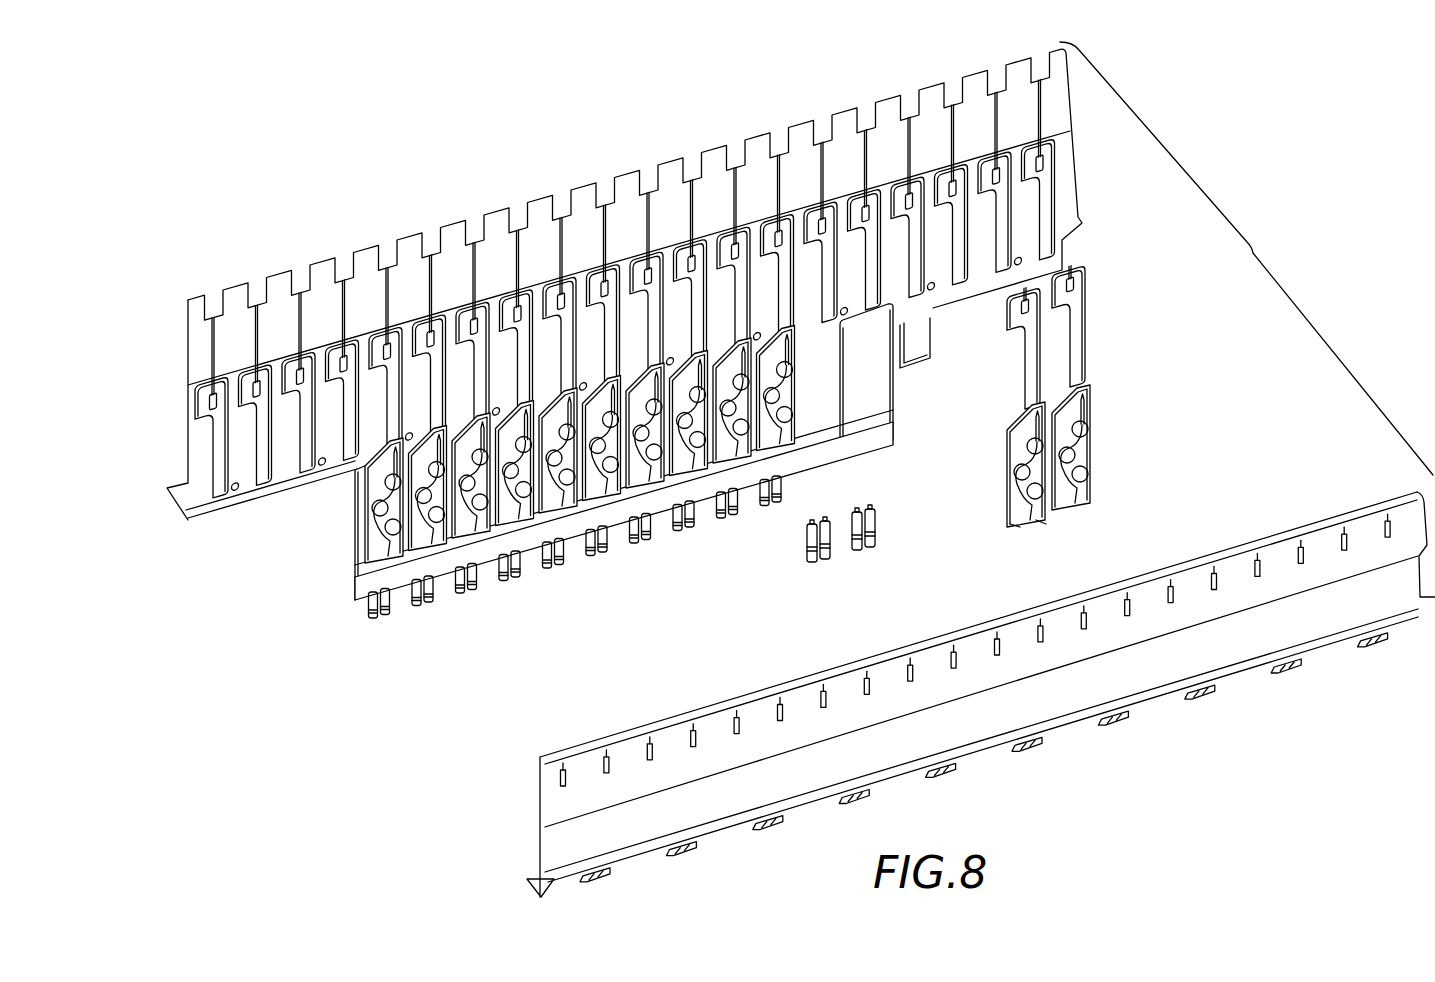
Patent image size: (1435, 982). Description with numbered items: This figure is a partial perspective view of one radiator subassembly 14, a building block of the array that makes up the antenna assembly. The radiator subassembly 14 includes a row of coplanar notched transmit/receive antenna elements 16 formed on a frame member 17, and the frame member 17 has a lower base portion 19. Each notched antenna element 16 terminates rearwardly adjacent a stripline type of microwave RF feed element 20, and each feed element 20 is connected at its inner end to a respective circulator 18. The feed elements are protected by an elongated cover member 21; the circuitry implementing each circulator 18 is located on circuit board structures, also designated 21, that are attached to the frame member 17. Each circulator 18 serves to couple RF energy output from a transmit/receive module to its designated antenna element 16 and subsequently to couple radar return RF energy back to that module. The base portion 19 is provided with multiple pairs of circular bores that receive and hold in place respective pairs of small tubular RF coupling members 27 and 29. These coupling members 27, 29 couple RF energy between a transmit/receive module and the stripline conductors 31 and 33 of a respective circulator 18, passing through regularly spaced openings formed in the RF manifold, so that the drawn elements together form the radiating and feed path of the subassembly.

The radiator subassembly 14 is at (1246, 258).
The notched transmit/receive antenna element 16 is at (403, 237).
The frame member 17 is at (188, 452).
The circulator 18 is at (1006, 494).
The lower base portion 19 is at (488, 549).
The stripline RF feed element 20 is at (1022, 365).
The elongated cover member 21 is at (355, 556).
The tubular RF coupling member 27 is at (380, 612).
The tubular RF coupling member 29 is at (394, 612).
The stripline conductor 31 is at (1014, 523).
The stripline conductor 33 is at (1040, 519).